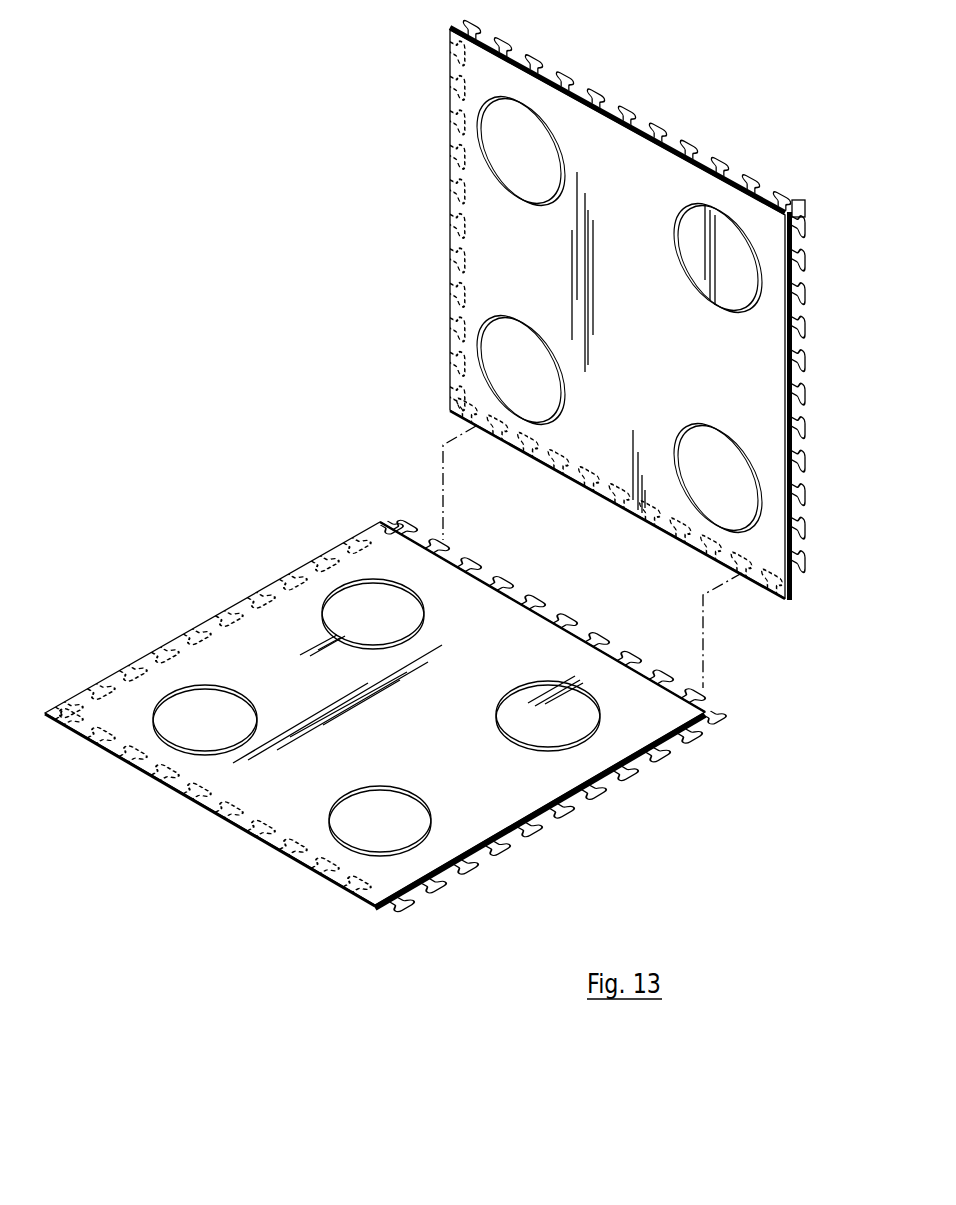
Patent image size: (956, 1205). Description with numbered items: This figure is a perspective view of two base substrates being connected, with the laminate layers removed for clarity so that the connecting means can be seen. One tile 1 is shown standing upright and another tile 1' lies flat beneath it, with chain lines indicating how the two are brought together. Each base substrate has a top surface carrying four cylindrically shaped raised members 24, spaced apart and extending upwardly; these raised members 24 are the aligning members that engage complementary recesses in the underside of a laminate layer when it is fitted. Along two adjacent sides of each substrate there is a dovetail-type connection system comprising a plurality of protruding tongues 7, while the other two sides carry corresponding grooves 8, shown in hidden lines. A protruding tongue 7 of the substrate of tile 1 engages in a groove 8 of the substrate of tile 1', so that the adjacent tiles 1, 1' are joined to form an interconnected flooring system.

The tile 1 is at (558, 314).
The another tile 1' is at (386, 709).
The protruding tongue 7 is at (472, 428).
The groove 8 is at (605, 497).
The raised members 24 is at (457, 467).